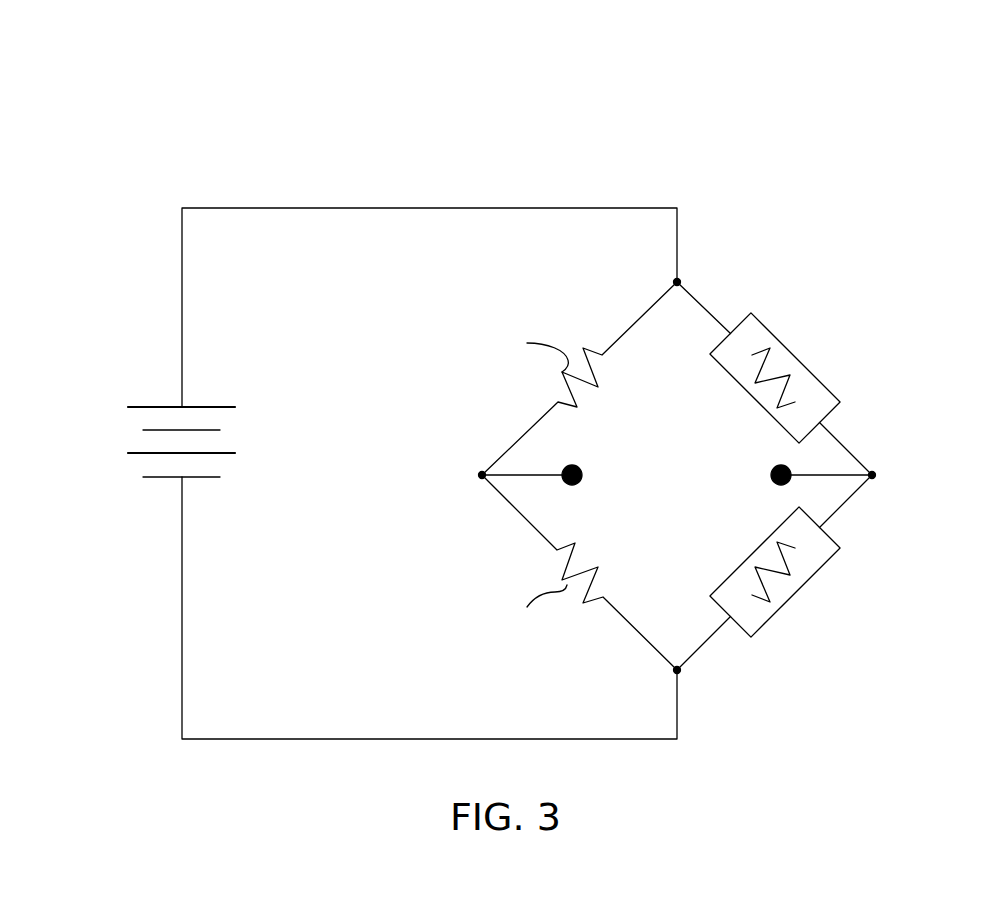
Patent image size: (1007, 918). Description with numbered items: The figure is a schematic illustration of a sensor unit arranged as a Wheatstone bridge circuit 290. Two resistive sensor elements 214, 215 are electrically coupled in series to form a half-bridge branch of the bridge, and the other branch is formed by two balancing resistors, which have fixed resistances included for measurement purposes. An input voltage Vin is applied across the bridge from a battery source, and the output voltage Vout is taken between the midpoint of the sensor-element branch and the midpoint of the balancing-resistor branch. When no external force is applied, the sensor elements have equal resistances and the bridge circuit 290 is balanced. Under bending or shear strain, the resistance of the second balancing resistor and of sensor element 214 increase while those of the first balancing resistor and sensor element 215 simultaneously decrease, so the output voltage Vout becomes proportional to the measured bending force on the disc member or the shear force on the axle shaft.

The bridge circuit 290 is at (853, 91).
The sensor element 214 is at (787, 347).
The sensor element 215 is at (787, 603).